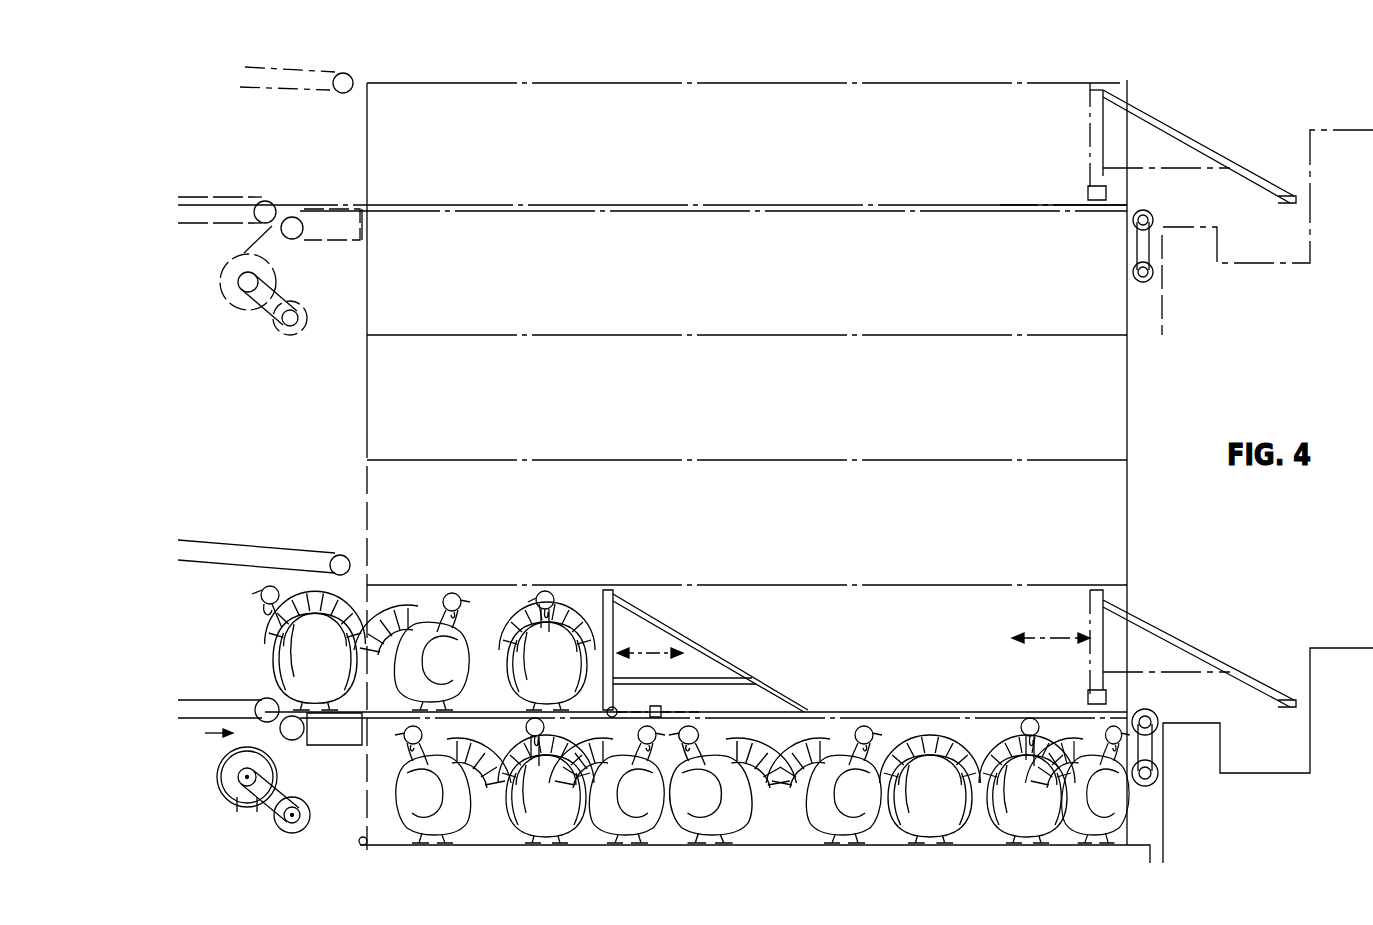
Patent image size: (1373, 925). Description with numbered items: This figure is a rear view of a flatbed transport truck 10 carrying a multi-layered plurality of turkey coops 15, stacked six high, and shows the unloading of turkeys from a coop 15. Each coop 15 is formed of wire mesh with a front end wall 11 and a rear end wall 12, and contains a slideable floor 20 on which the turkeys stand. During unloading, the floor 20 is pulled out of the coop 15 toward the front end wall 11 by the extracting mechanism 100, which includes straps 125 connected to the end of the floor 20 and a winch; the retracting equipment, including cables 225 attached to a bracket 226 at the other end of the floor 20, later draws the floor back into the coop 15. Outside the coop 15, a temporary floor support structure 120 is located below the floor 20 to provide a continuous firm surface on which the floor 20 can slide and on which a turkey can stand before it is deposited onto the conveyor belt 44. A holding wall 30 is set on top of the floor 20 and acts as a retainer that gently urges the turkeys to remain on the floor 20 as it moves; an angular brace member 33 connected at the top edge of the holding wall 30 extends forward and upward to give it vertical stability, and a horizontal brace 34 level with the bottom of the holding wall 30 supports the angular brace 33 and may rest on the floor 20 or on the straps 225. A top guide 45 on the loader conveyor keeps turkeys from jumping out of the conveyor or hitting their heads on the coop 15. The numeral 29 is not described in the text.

The flatbed transport truck 10 is at (1161, 105).
The front end wall 11 is at (362, 387).
The rear end wall 12 is at (1130, 399).
The coop 15 is at (1130, 528).
The slideable floor 20 is at (395, 714).
The drive motor 29 is at (235, 790).
The holding wall 30 is at (608, 590).
The angular brace member 33 is at (720, 660).
The horizontal brace 34 is at (693, 673).
The conveyor belt 44 is at (222, 690).
The top guide 45 is at (297, 552).
The extracting mechanism 100 is at (323, 810).
The temporary floor support structure 120 is at (307, 746).
The straps 125 is at (258, 736).
The cables 225 is at (1150, 712).
The bracket 226 is at (642, 710).